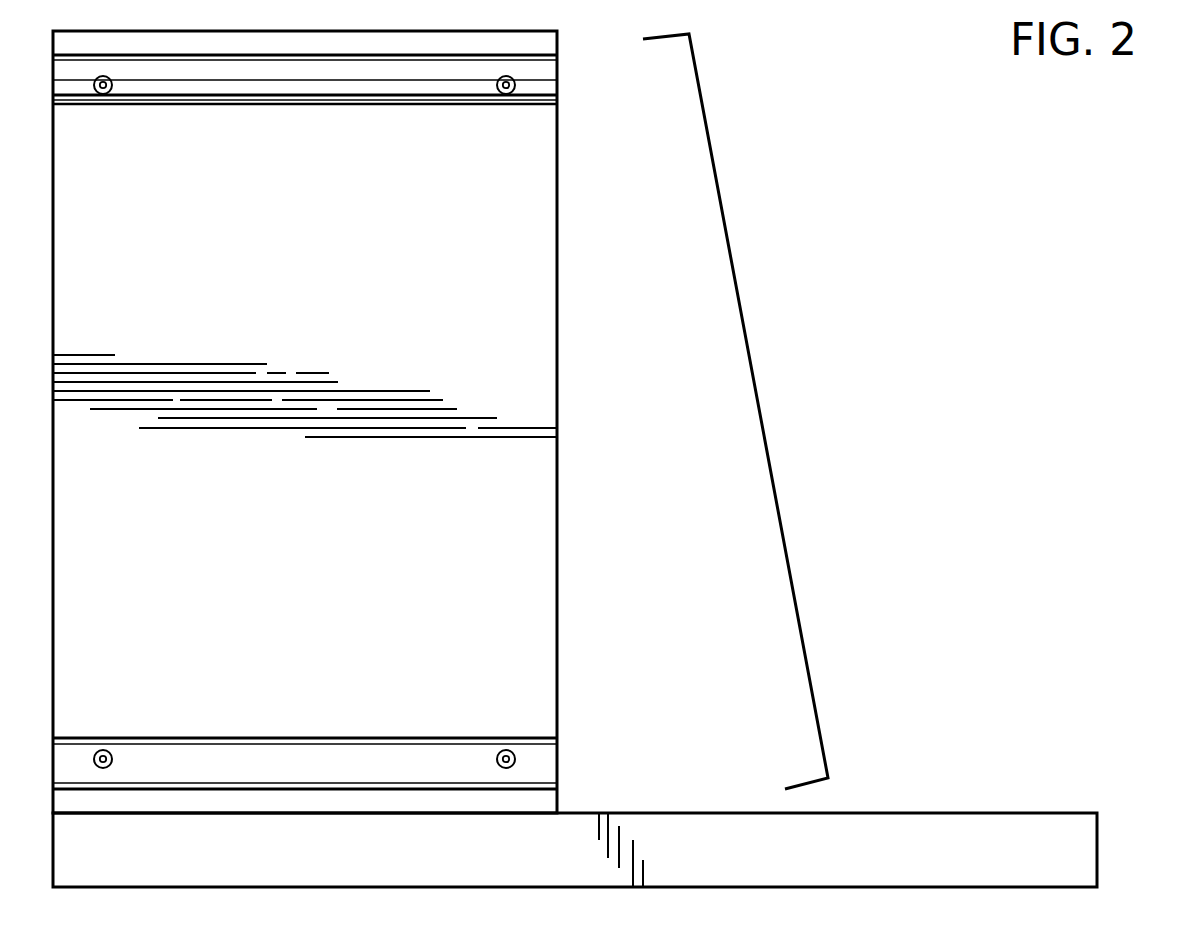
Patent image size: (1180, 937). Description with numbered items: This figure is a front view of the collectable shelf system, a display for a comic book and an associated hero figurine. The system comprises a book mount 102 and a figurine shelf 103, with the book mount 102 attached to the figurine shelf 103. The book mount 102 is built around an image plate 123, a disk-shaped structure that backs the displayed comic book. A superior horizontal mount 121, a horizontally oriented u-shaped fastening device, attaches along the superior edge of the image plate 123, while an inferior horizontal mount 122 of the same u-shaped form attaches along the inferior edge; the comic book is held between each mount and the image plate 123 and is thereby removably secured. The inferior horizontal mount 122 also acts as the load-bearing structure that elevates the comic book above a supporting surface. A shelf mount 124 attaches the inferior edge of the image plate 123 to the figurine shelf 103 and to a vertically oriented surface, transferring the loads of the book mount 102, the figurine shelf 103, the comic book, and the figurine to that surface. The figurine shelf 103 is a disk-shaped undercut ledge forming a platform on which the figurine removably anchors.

The book mount 102 is at (758, 405).
The figurine shelf 103 is at (1024, 817).
The superior horizontal mount 121 is at (534, 73).
The inferior horizontal mount 122 is at (539, 768).
The image plate 123 is at (516, 629).
The shelf mount 124 is at (546, 800).